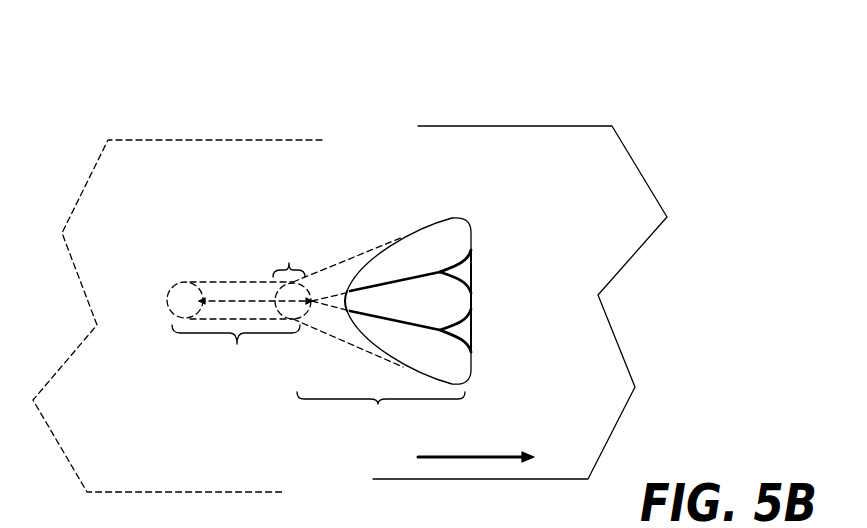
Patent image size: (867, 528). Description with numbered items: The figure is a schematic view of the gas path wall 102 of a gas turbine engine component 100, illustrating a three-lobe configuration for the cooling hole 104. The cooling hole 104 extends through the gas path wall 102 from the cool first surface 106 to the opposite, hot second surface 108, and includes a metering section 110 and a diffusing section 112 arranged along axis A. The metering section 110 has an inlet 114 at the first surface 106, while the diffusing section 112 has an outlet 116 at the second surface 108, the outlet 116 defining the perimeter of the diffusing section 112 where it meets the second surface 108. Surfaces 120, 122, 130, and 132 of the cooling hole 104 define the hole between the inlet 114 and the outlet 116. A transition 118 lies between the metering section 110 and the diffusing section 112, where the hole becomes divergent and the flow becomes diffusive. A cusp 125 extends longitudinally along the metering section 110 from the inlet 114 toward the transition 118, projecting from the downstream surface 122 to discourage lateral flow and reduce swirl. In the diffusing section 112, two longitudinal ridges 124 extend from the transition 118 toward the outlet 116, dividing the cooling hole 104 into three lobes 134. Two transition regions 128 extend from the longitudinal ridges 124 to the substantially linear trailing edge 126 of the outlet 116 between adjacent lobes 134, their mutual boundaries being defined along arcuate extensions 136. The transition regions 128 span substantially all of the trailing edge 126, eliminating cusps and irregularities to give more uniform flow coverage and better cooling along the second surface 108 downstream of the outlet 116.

The gas turbine engine component 100 is at (122, 95).
The gas path wall 102 is at (353, 470).
The cooling hole 104 is at (215, 405).
The first surface 106 is at (78, 200).
The second surface 108 is at (643, 180).
The metering section 110 is at (236, 353).
The diffusing section 112 is at (381, 414).
The inlet 114 is at (177, 285).
The outlet 116 is at (425, 222).
The transition 118 is at (295, 274).
The surface 120 is at (355, 273).
The downstream surface 122 is at (445, 310).
The longitudinal ridges 124 is at (423, 273).
The cusp 125 is at (232, 299).
The trailing edge 126 is at (472, 237).
The transition regions 128 is at (462, 272).
The surface 130 is at (250, 282).
The surface 132 is at (218, 320).
The lobes 134 is at (450, 230).
The arcuate extensions 136 is at (470, 320).